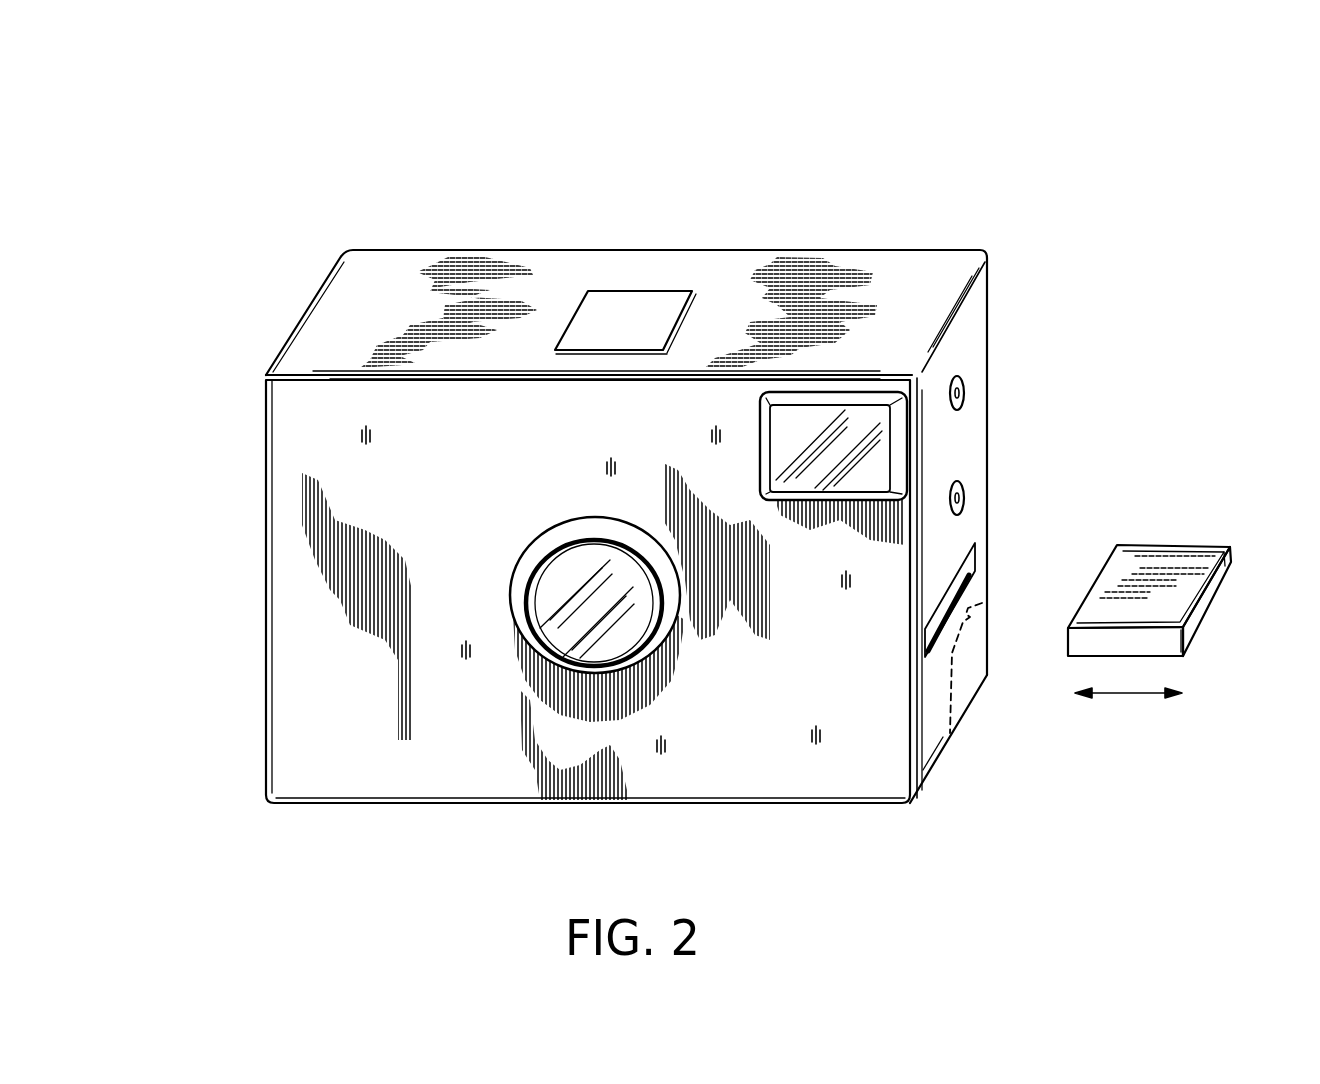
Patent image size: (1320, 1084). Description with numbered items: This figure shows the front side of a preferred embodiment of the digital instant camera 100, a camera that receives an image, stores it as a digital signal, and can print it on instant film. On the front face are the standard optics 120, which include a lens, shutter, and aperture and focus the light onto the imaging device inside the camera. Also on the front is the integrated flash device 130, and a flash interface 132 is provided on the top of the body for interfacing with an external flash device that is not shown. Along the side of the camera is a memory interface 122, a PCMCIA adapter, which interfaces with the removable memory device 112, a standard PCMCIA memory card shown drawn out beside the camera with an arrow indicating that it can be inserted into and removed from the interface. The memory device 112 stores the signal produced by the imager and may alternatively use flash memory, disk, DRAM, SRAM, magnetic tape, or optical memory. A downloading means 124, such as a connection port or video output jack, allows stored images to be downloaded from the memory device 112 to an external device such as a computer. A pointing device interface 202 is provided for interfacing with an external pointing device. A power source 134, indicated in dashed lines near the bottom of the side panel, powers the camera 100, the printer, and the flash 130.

The digital instant camera 100 is at (555, 216).
The memory device 112 is at (1178, 545).
The standard optics 120 is at (538, 585).
The memory interface 122 is at (960, 573).
The downloading means 124 is at (965, 382).
The integrated flash device 130 is at (813, 412).
The flash interface 132 is at (670, 292).
The power source 134 is at (967, 703).
The pointing device interface 202 is at (965, 487).